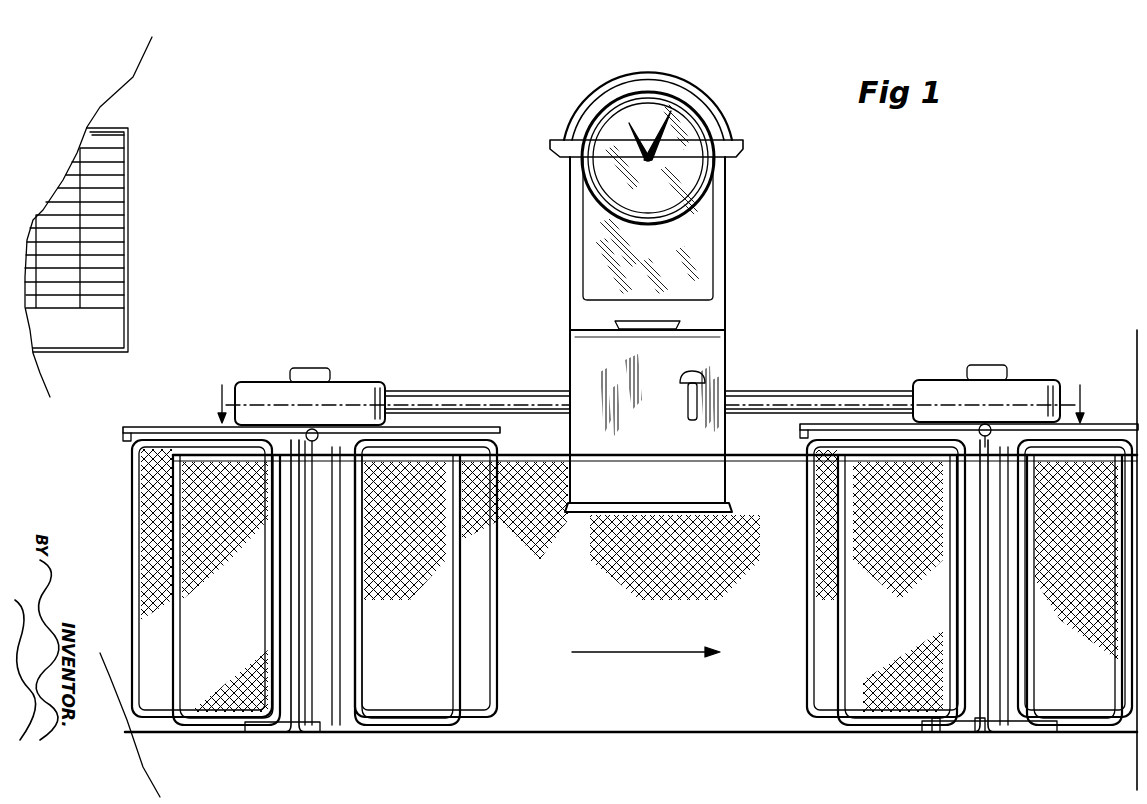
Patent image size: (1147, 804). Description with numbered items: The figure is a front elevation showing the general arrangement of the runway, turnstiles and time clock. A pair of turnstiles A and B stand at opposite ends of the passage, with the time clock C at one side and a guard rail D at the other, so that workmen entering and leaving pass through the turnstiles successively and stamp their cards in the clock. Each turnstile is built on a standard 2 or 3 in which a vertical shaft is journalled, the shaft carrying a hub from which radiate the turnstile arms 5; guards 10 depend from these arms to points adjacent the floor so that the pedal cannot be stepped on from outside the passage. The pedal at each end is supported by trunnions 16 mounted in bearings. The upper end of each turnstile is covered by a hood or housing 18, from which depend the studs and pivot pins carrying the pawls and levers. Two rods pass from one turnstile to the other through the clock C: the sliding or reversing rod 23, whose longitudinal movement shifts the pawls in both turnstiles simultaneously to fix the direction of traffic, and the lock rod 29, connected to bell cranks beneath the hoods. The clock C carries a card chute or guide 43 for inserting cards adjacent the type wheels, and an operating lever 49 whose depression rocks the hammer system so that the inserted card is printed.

The standard 2 is at (292, 734).
The standard 3 is at (1006, 734).
The turnstile arms 5 is at (190, 427).
The guards 10 is at (140, 470).
The trunnions 16 is at (649, 404).
The hood or housing 18 is at (355, 381).
The sliding rod (reversing rod) 23 is at (758, 410).
The lock rod 29 is at (748, 393).
The card chute or guide 43 is at (676, 322).
The operating lever 49 is at (706, 376).
The turnstile A is at (466, 527).
The turnstile B is at (969, 528).
The time clock C is at (722, 105).
The guard rail D is at (541, 452).